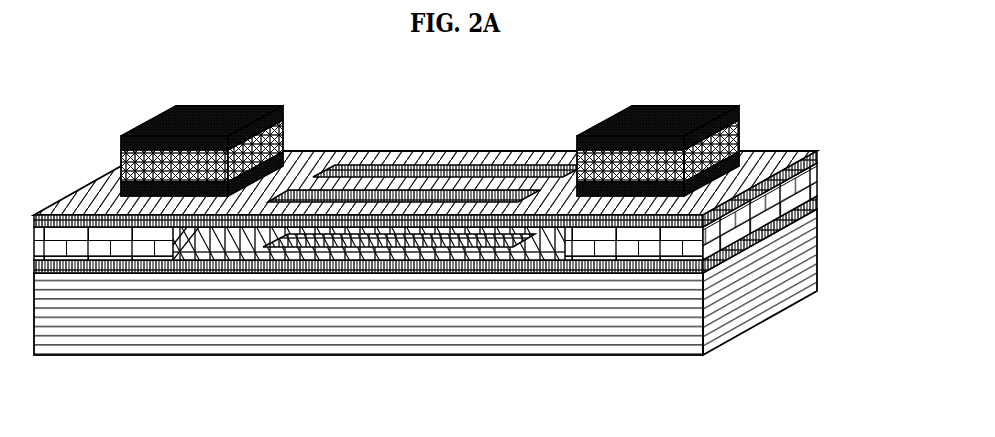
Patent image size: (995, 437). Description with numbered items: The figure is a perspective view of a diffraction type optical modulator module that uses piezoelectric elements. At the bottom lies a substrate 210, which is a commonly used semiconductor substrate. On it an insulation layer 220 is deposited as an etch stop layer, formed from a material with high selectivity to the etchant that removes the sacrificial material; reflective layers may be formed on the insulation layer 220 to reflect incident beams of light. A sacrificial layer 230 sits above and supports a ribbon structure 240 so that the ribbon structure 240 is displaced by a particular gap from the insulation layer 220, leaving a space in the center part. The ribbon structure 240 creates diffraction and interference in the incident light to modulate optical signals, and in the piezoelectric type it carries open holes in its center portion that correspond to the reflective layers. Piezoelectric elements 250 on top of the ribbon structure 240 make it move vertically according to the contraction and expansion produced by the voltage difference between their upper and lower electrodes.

The substrate 210 is at (817, 260).
The insulation layer 220 is at (817, 203).
The sacrificial layer 230 is at (817, 180).
The ribbon structure 240 is at (817, 153).
The piezoelectric element 250 is at (740, 113).